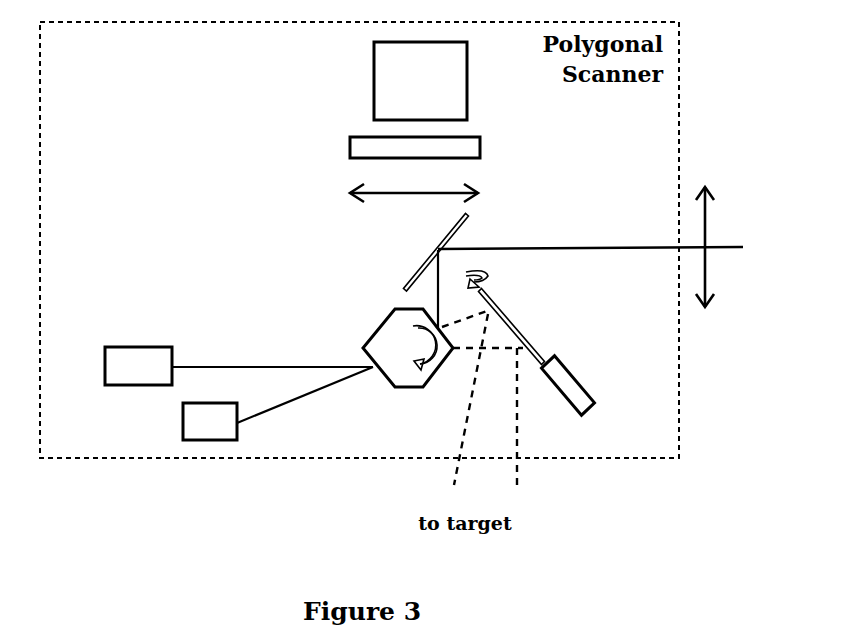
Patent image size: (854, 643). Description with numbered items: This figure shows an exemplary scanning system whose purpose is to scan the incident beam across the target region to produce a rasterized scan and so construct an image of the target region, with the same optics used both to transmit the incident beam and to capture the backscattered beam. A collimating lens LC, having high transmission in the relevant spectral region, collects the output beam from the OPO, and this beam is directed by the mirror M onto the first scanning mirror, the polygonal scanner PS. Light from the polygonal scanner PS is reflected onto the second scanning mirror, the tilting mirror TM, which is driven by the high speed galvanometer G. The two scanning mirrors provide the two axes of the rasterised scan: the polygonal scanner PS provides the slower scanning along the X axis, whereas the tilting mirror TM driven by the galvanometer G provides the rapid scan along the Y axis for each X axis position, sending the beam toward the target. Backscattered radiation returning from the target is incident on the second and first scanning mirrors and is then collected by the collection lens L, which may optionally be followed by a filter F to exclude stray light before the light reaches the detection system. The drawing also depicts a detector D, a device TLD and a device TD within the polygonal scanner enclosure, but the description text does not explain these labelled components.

The detector D is at (374, 61).
The filter F is at (480, 137).
The collection lens L is at (478, 193).
The mirror M is at (415, 271).
The polygonal scanner PS is at (403, 387).
The transmit laser diode TLD is at (132, 347).
The timing detector TD is at (237, 442).
The tilting mirror TM is at (510, 323).
The galvanometer G is at (582, 388).
The collimating lens LC is at (715, 226).